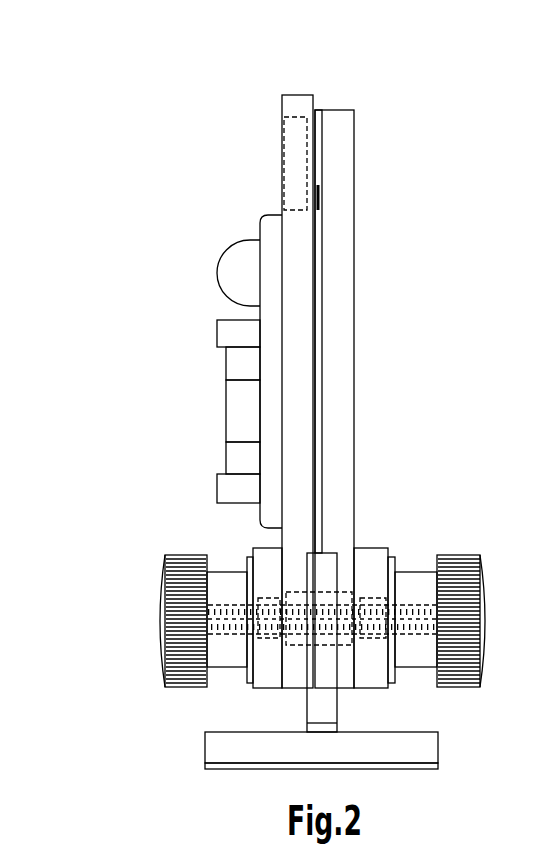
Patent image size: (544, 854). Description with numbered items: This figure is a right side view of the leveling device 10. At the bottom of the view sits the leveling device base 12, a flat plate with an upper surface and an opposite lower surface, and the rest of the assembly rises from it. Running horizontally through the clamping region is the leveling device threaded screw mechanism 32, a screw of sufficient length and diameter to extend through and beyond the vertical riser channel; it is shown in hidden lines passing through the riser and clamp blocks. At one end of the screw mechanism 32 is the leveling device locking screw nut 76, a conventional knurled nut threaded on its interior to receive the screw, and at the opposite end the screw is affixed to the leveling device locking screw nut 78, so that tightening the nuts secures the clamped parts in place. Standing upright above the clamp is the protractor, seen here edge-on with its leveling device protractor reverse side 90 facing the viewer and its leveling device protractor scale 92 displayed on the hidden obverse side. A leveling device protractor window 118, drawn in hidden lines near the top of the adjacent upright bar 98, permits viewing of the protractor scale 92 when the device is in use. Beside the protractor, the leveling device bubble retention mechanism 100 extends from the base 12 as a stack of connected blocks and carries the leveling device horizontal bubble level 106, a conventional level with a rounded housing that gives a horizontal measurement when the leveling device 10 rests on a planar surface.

The leveling device 10 is at (341, 70).
The leveling device base 12 is at (438, 748).
The leveling device threaded screw mechanism 32 is at (413, 605).
The leveling device locking screw nut 76 is at (183, 560).
The leveling device locking screw nut 78 is at (477, 572).
The leveling device protractor reverse side 90 is at (355, 327).
The leveling device protractor scale 92 is at (313, 173).
The mounting bar 98 is at (315, 110).
The leveling device bubble retention mechanism 100 is at (226, 364).
The leveling device horizontal bubble level 106 is at (237, 240).
The leveling device protractor window 118 is at (296, 150).